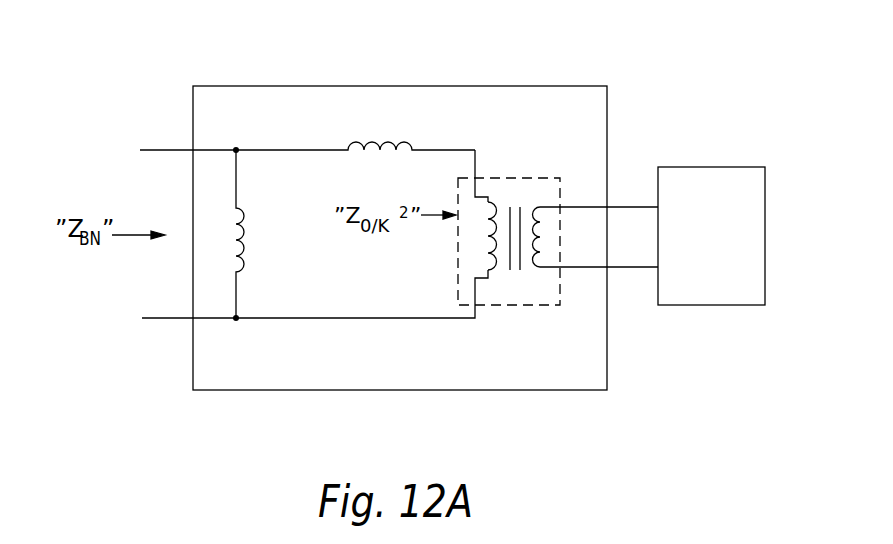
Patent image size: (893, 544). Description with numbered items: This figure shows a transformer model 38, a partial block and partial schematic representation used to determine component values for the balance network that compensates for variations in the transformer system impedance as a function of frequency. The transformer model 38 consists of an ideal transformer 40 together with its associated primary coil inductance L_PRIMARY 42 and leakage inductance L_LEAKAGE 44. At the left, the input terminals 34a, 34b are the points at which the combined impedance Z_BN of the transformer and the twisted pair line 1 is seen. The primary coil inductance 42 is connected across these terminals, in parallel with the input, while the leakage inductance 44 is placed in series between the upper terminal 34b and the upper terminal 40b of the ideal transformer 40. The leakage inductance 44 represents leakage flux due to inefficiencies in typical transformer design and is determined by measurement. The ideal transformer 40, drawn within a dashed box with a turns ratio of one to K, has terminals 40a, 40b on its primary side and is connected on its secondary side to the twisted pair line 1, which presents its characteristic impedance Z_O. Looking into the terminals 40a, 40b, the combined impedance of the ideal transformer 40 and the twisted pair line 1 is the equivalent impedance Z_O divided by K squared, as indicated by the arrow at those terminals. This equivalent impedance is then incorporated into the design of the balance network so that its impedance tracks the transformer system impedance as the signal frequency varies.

The twisted pair line 1 is at (713, 167).
The transformer model 38 is at (503, 84).
The terminal 34a is at (152, 320).
The terminal 34b is at (152, 148).
The ideal transformer 40 is at (516, 176).
The terminal 40a is at (428, 320).
The terminal 40b is at (448, 148).
The primary coil inductance 42 is at (250, 272).
The leakage inductance 44 is at (360, 158).